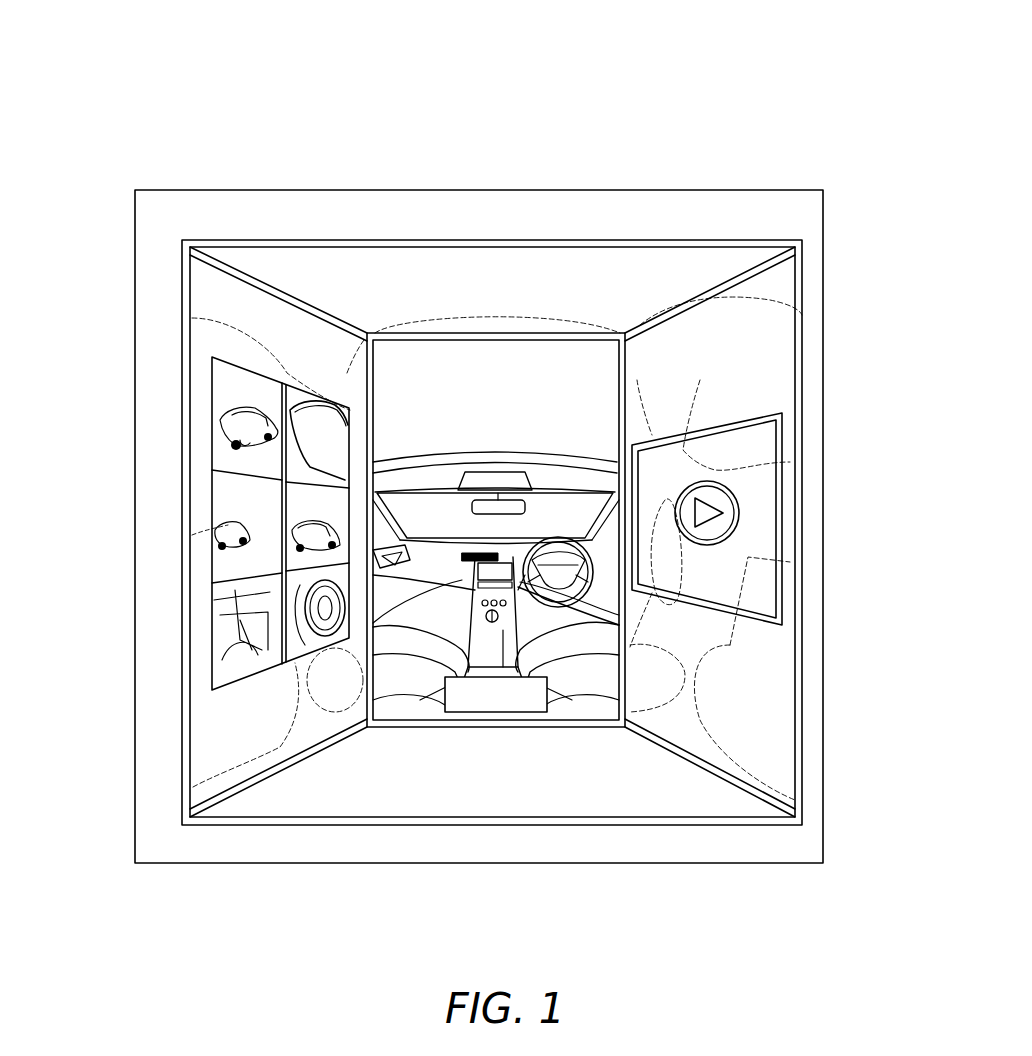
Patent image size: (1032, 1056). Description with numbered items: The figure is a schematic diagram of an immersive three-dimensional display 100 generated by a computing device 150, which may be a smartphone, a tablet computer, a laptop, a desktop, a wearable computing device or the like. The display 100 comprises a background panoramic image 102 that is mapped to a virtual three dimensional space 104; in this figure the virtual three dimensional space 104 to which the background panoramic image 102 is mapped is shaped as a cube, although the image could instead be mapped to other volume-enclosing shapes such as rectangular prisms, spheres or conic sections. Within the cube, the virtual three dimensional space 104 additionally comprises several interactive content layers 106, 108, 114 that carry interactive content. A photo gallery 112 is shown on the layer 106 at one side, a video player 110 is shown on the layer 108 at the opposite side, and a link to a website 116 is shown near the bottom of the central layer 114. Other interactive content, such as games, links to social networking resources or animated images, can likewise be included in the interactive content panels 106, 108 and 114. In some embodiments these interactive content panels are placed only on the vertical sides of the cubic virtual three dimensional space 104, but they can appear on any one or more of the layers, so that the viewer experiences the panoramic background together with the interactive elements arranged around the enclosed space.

The immersive 3D display 100 is at (730, 58).
The background panoramic image 102 is at (449, 265).
The virtual three dimensional space 104 is at (203, 277).
The interactive content layer 106 is at (215, 752).
The interactive content layer 108 is at (762, 688).
The video player 110 is at (735, 492).
The photo gallery 112 is at (218, 432).
The interactive content layer 114 is at (523, 345).
The link to a website 116 is at (497, 712).
The computing device 150 is at (689, 863).